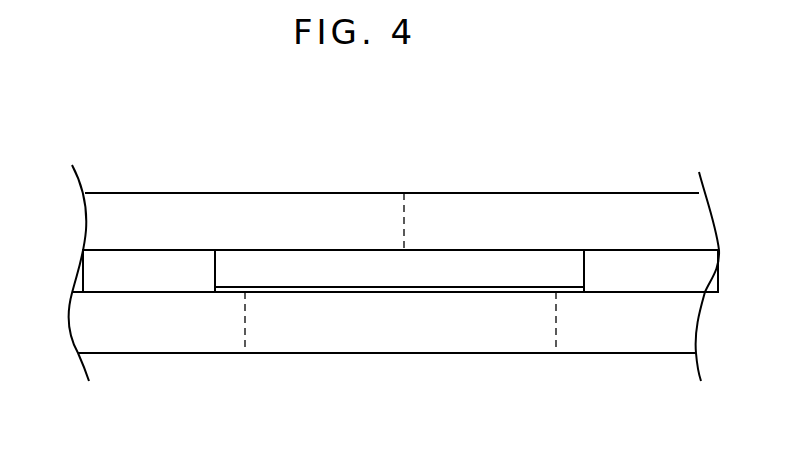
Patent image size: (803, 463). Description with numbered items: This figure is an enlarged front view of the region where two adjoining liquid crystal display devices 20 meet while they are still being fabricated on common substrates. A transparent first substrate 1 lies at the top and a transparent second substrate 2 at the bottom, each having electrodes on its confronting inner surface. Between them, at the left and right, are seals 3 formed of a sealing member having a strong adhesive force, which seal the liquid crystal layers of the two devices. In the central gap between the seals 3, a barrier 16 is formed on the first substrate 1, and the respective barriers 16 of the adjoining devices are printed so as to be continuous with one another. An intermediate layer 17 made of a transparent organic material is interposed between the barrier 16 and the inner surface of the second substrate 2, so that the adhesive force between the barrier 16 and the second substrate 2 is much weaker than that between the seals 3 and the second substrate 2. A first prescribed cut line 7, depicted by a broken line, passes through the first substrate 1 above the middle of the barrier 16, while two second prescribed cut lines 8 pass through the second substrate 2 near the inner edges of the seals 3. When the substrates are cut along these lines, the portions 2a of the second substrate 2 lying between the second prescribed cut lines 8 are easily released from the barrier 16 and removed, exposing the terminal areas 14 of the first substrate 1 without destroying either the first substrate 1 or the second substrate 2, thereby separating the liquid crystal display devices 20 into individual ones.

The first substrate 1 is at (537, 203).
The second substrate 2 is at (630, 345).
The portions within the second prescribed cut lines 2a is at (492, 347).
The seal 3 is at (97, 270).
The first prescribed cut line 7 is at (405, 213).
The second prescribed cut line 8 is at (245, 333).
The terminal area 14 is at (312, 252).
The barrier 16 is at (362, 265).
The intermediate layer 17 is at (378, 293).
The liquid crystal display device 20 is at (184, 183).